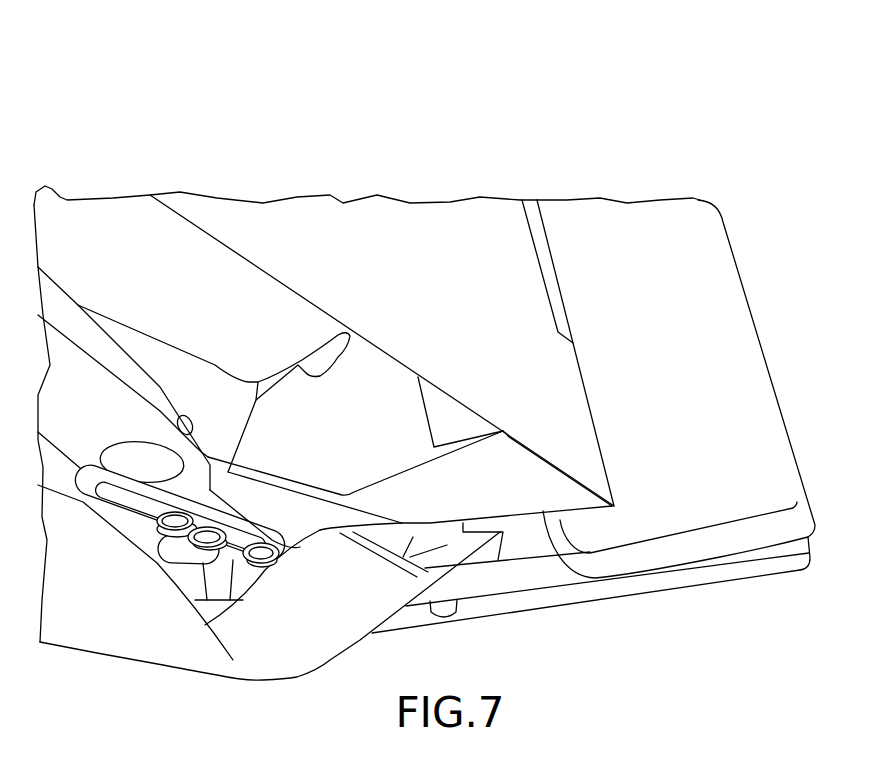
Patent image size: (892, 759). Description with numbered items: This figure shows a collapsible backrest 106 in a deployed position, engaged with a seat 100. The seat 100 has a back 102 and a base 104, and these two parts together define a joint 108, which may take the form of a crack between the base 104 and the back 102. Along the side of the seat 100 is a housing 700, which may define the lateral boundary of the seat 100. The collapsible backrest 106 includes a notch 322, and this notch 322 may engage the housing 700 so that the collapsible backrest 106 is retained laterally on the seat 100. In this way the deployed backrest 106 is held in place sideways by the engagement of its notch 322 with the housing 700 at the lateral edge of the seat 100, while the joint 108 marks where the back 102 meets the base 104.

The seat 100 is at (681, 84).
The back 102 is at (113, 230).
The base 104 is at (748, 380).
The collapsible backrest 106 is at (585, 425).
The joint 108 is at (457, 553).
The notch 322 is at (324, 497).
The housing 700 is at (227, 477).